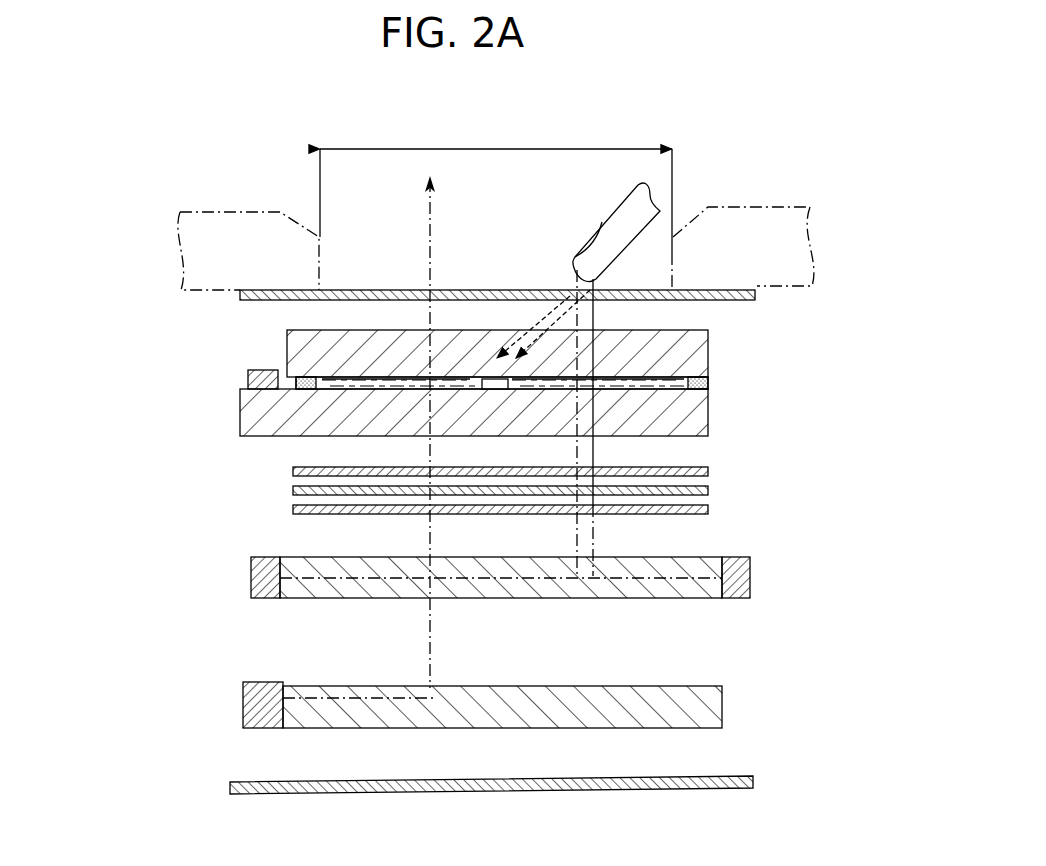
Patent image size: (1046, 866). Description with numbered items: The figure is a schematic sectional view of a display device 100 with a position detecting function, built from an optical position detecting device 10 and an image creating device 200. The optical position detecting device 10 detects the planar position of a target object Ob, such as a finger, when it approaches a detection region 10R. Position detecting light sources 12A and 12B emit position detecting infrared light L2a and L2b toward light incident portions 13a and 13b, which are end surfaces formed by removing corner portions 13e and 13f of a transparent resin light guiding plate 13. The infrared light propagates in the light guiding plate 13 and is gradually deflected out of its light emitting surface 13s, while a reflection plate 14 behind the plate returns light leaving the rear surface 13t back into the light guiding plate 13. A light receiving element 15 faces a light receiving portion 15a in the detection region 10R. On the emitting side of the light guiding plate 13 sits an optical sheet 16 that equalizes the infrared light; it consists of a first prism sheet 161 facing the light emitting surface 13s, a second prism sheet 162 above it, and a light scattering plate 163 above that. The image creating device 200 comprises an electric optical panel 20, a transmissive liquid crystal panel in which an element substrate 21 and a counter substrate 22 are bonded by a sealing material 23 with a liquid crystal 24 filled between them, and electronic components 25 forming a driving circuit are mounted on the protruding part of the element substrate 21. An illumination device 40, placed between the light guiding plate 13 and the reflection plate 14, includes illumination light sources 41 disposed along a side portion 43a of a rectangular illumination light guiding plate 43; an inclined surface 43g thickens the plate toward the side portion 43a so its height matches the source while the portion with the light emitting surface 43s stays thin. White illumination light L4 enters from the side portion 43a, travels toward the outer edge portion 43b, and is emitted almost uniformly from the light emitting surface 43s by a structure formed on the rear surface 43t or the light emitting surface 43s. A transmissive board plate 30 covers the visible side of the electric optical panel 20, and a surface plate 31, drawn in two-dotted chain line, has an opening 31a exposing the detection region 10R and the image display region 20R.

The display device with a position detecting function 100 is at (529, 81).
The detection region 10R is at (496, 187).
The image display region 20R is at (496, 187).
The illumination light L4 is at (430, 455).
The opening 31a is at (318, 243).
The surface plate 31 is at (748, 207).
The target object Ob is at (627, 236).
The position detecting infrared light L2a is at (562, 312).
The position detecting infrared light L2b is at (620, 408).
The board plate 30 is at (240, 295).
The image creating device 200 is at (166, 333).
The electric optical panel 20 is at (222, 385).
The counter substrate 22 is at (708, 349).
The sealing material 23 is at (501, 386).
The liquid crystal 24 is at (338, 379).
The light receiving element 15 is at (498, 390).
The light receiving portion 15a is at (494, 378).
The element substrate 21 is at (708, 406).
The electronic components 25 is at (258, 370).
The optical sheet 16 is at (556, 478).
The light scattering plate 163 is at (708, 471).
The second prism sheet 162 is at (708, 490).
The first prism sheet 161 is at (536, 506).
The optical position detecting device 10 is at (152, 533).
The light guiding plate 13 is at (498, 583).
The light incident portion 13b is at (203, 589).
The corner portion 13f is at (203, 589).
The position detecting light source 12B is at (252, 566).
The light incident portion 13a is at (796, 567).
The corner portion 13e is at (796, 567).
The position detecting light source 12A is at (750, 584).
The light emitting surface 13s is at (488, 557).
The rear surface 13t is at (374, 598).
The illumination device 40 is at (152, 645).
The illumination light source 41 is at (250, 708).
The illumination light guiding plate 43 is at (491, 700).
The inclined surface 43g is at (298, 686).
The side portion 43a is at (243, 689).
The light emitting surface 43s is at (490, 686).
The outer edge portion 43b is at (723, 705).
The rear surface 43t is at (425, 728).
The reflection plate 14 is at (705, 790).